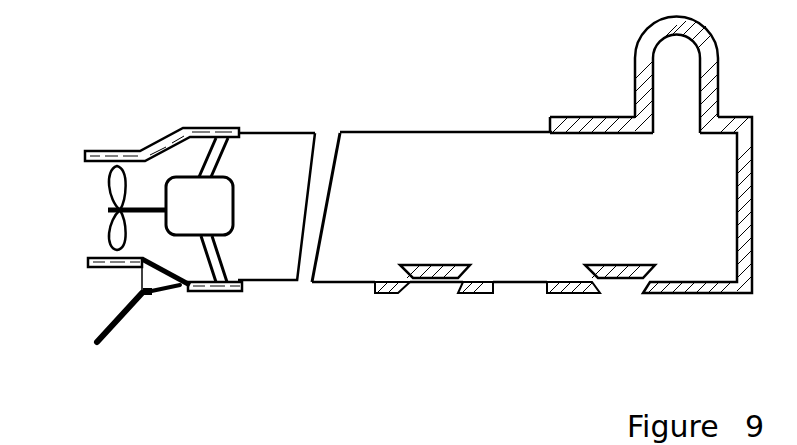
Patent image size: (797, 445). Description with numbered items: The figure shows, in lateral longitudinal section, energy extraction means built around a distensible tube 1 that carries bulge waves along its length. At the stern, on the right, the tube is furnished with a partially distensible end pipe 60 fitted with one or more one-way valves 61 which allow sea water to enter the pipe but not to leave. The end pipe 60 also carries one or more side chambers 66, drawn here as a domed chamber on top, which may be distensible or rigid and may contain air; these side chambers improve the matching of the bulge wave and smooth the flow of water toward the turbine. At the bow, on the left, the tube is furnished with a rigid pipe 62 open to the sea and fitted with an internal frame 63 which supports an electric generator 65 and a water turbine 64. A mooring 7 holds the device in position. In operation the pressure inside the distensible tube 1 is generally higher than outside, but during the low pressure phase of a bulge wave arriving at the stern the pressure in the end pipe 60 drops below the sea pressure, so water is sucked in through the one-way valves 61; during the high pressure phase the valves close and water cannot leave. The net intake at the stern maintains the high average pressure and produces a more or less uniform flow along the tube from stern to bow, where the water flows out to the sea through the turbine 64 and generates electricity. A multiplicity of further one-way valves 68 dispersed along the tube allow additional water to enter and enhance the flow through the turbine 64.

The distensible tube 1 is at (440, 132).
The mooring 7 is at (112, 333).
The end pipe 60 is at (708, 293).
The one-way valve 61 is at (618, 278).
The rigid pipe 62 is at (153, 142).
The internal frame 63 is at (223, 158).
The water turbine 64 is at (118, 178).
The electric generator 65 is at (222, 220).
The side chamber 66 is at (642, 78).
The one-way valve 68 is at (442, 278).